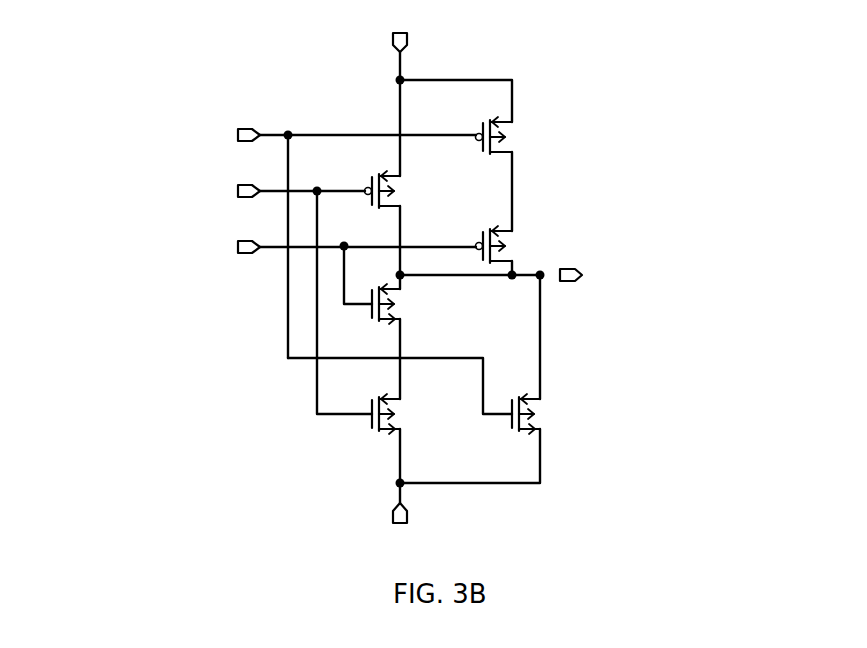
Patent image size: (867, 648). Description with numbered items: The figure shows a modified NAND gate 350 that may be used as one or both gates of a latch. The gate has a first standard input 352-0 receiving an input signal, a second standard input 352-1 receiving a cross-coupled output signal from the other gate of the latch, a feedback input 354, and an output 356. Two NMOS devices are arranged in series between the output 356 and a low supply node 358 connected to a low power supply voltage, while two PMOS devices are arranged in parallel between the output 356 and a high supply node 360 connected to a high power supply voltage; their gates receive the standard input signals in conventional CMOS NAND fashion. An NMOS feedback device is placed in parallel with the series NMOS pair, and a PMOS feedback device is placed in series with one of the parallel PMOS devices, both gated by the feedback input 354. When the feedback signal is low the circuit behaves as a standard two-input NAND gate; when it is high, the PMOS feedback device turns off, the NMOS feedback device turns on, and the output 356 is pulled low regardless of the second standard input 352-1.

The modified NAND gate 350 is at (603, 60).
The first standard input 352-0 is at (238, 191).
The second standard input 352-1 is at (238, 247).
The feedback input 354 is at (238, 135).
The output 356 is at (584, 275).
The low supply node 358 is at (393, 519).
The high supply node 360 is at (393, 48).